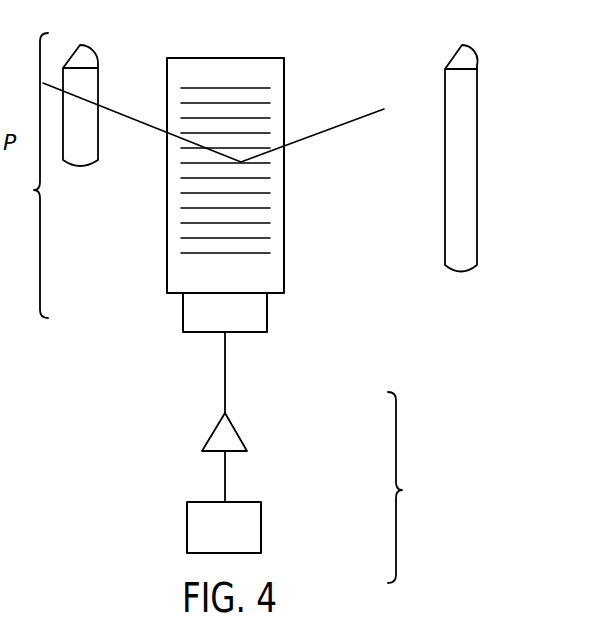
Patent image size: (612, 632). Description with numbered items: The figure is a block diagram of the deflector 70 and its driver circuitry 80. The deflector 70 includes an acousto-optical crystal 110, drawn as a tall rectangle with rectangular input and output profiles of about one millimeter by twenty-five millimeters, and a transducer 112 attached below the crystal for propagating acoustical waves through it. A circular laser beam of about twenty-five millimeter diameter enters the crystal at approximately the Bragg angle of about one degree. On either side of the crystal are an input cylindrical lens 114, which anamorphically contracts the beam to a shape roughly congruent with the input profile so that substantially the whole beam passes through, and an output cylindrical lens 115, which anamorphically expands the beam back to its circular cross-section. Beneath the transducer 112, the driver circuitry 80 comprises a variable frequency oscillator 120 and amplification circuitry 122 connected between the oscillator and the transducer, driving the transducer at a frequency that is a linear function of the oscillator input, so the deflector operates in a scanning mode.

The deflector 70 is at (30, 175).
The driver circuitry 80 is at (411, 487).
The acousto-optical crystal 110 is at (276, 57).
The transducer 112 is at (268, 313).
The input cylindrical lens 114 is at (100, 141).
The output cylindrical lens 115 is at (448, 63).
The variable frequency oscillator 120 is at (262, 517).
The amplification circuitry 122 is at (238, 431).